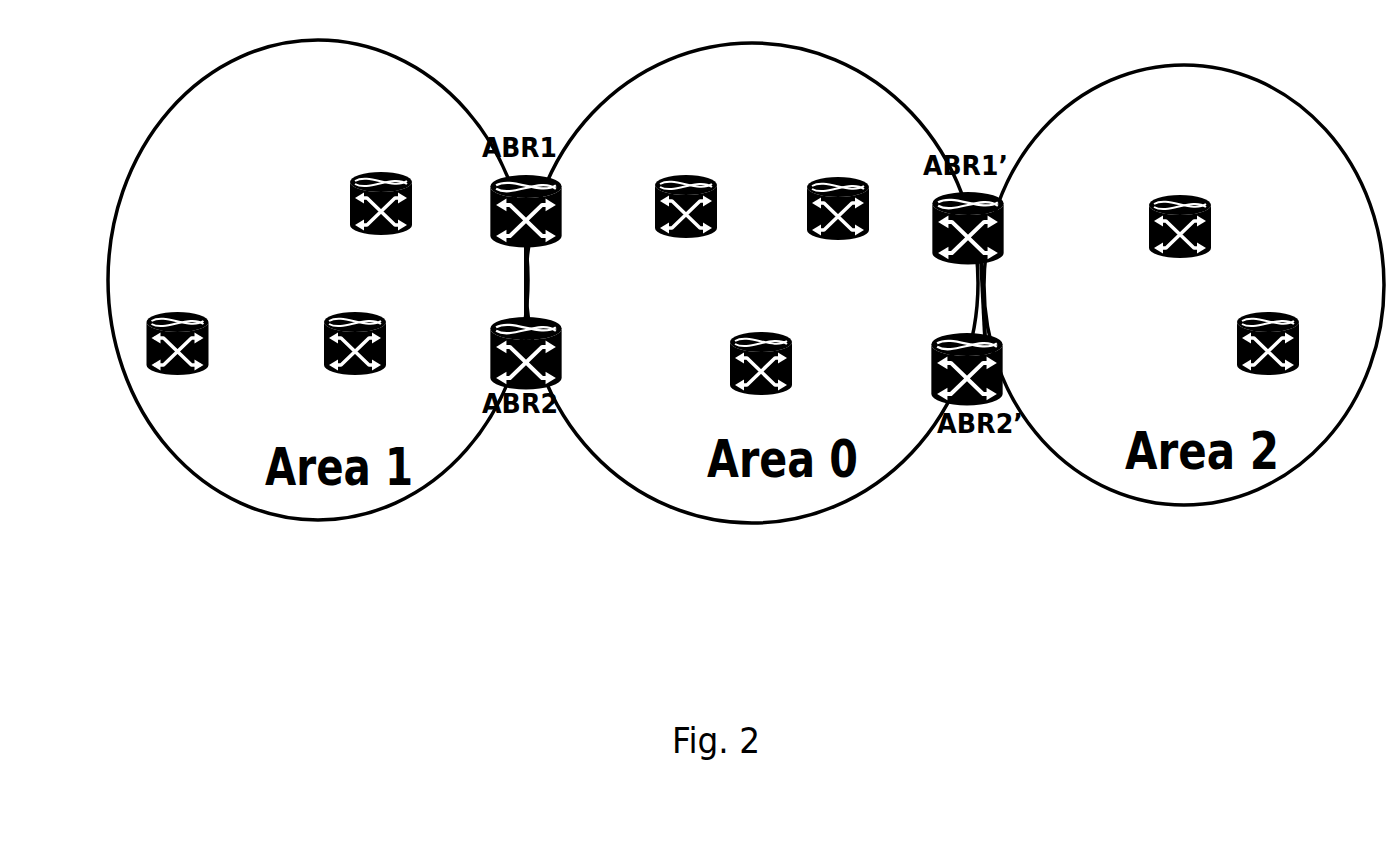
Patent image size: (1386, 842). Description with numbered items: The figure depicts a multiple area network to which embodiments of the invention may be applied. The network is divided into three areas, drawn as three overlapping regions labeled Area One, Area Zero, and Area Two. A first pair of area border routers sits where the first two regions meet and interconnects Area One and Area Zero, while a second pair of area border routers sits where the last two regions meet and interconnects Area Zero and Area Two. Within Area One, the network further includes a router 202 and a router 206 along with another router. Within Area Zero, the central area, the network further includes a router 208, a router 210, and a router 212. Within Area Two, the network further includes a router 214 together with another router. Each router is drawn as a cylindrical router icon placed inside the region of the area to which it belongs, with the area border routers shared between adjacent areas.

The router 202 is at (208, 321).
The router 206 is at (387, 321).
The router 208 is at (717, 184).
The router 210 is at (867, 189).
The router 212 is at (793, 341).
The router 214 is at (1212, 203).